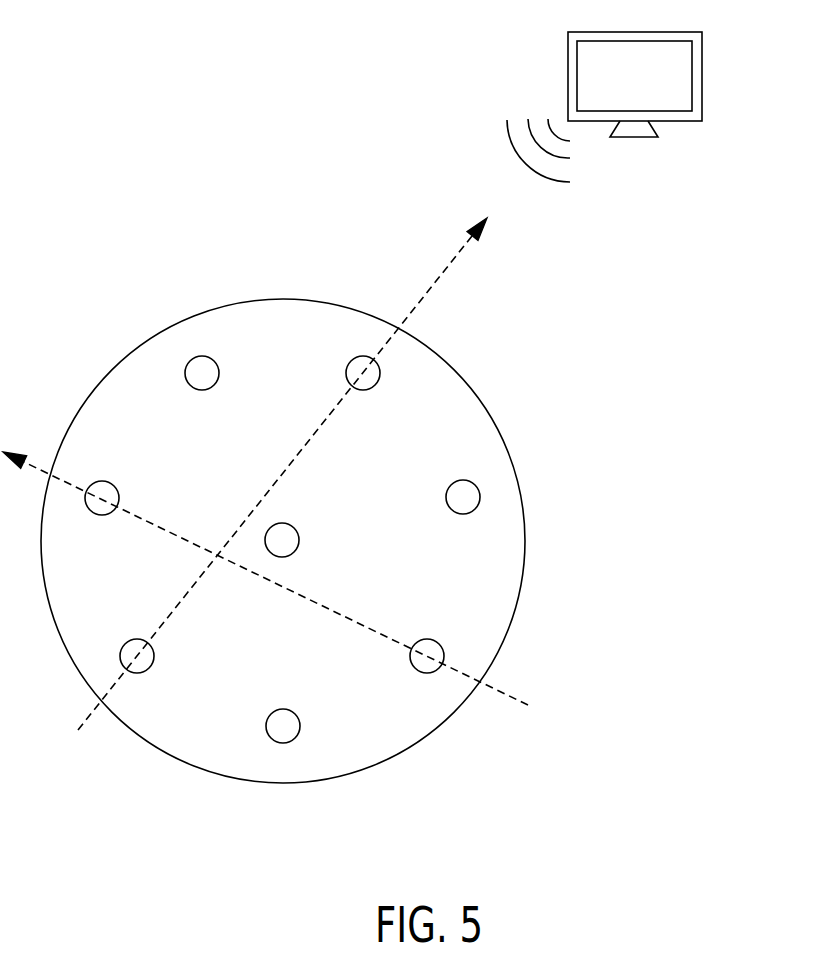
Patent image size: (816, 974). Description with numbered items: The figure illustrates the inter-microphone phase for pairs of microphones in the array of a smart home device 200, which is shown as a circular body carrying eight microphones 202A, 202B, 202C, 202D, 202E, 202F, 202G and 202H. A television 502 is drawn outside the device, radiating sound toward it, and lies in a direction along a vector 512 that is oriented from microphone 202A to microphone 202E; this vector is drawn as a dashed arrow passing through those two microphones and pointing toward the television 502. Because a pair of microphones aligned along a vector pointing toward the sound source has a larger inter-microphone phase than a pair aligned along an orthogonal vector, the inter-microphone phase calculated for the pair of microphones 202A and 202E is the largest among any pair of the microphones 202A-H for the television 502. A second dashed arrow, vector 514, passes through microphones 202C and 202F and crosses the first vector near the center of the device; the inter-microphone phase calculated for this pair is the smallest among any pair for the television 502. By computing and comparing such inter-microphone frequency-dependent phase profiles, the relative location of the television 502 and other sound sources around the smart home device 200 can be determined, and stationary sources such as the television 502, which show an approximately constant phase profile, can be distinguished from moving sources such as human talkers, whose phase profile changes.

The smart home device 200 is at (497, 428).
The microphone 202A is at (378, 381).
The microphone 202B is at (463, 514).
The microphone 202C is at (427, 639).
The microphone 202D is at (300, 726).
The microphone 202E is at (154, 656).
The microphone 202F is at (119, 498).
The microphone 202G is at (219, 373).
The microphone 202H is at (299, 540).
The television 502 is at (702, 80).
The vector 512 is at (458, 257).
The vector 514 is at (500, 692).